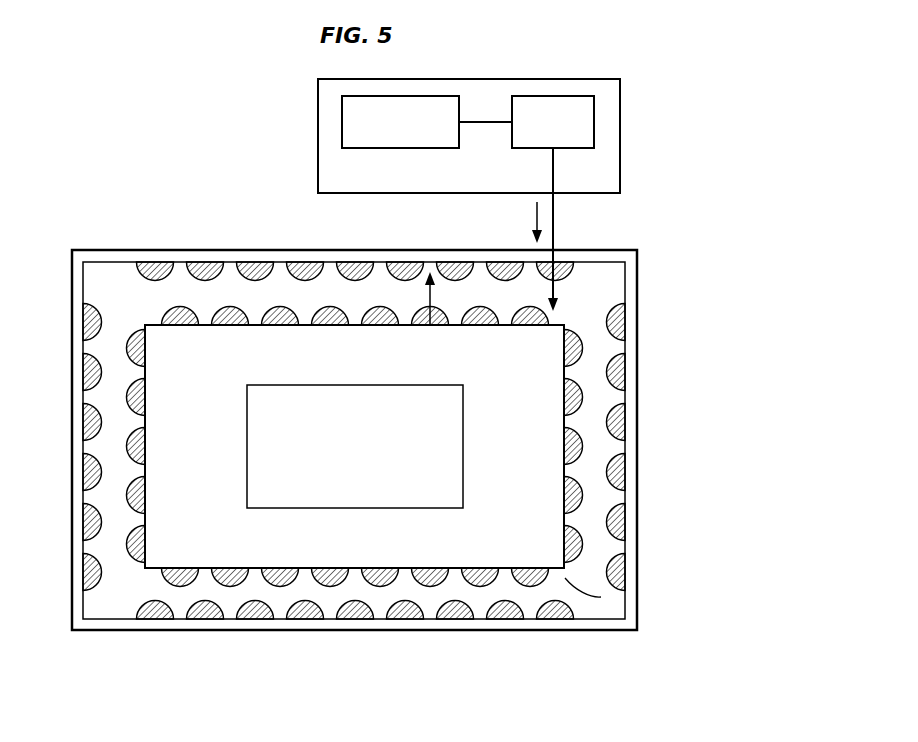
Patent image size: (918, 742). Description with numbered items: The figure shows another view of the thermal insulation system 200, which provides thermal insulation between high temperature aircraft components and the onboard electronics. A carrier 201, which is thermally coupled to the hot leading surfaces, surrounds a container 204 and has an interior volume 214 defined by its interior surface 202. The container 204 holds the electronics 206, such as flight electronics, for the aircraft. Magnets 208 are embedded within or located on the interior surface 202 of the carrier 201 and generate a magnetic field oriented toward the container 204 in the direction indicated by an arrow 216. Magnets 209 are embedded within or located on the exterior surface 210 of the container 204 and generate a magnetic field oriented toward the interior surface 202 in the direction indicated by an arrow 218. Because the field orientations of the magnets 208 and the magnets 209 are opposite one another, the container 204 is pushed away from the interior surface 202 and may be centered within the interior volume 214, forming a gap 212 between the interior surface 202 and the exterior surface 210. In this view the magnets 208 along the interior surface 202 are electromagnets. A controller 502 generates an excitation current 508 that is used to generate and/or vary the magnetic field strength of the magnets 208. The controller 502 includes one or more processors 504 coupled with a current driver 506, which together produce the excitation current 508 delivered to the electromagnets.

The thermal insulation system 200 is at (134, 216).
The carrier 201 is at (220, 260).
The interior surface 202 is at (126, 612).
The container 204 is at (354, 446).
The electronics 206 is at (355, 446).
The magnets 208 is at (573, 267).
The magnets 209 is at (430, 326).
The exterior surface 210 is at (146, 312).
The gap 212 is at (592, 598).
The interior volume 214 is at (612, 295).
The arrow 216 is at (549, 297).
The arrow 218 is at (434, 294).
The controller 502 is at (469, 136).
The processor 504 is at (400, 122).
The current driver 506 is at (553, 173).
The excitation current 508 is at (534, 216).